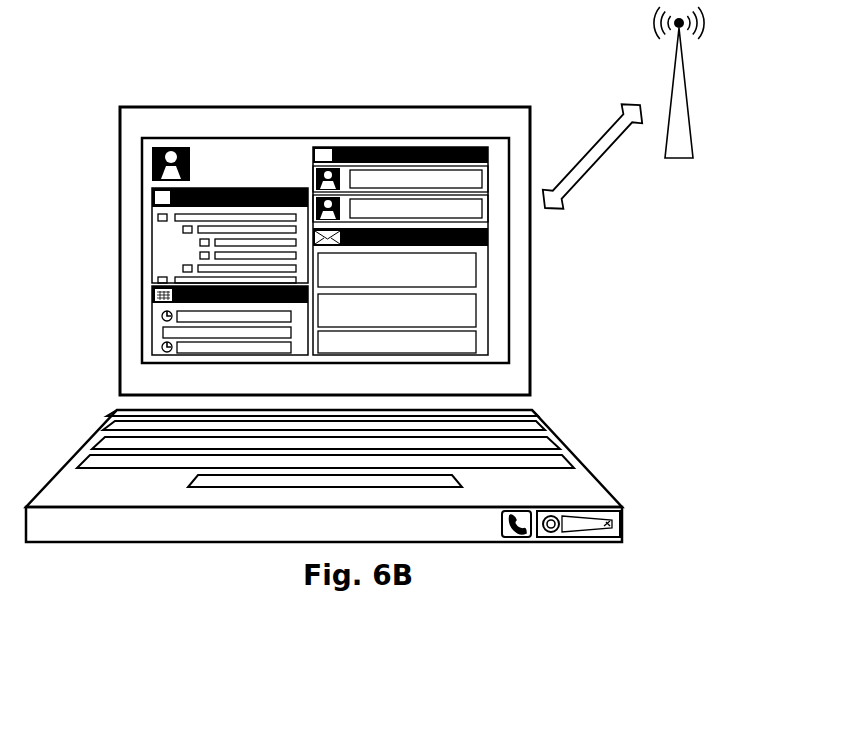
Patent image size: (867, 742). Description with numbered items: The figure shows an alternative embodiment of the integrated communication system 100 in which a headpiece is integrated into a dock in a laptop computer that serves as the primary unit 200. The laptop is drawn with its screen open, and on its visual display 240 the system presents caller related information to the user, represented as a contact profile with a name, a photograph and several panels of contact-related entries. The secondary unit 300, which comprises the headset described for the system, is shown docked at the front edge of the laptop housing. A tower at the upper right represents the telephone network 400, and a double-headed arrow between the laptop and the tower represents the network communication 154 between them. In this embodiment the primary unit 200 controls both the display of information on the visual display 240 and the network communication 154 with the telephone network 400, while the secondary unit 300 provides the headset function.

The integrated communication system 100 is at (680, 341).
The primary unit 200 is at (481, 110).
The visual display 240 is at (498, 264).
The secondary unit 300 is at (580, 552).
The telephone network 400 is at (686, 117).
The network communication 154 is at (586, 168).